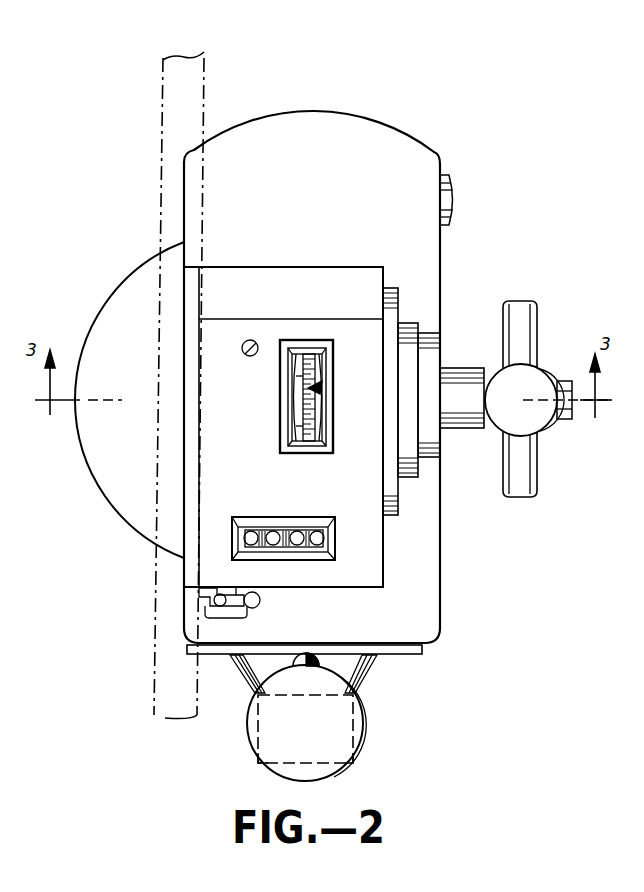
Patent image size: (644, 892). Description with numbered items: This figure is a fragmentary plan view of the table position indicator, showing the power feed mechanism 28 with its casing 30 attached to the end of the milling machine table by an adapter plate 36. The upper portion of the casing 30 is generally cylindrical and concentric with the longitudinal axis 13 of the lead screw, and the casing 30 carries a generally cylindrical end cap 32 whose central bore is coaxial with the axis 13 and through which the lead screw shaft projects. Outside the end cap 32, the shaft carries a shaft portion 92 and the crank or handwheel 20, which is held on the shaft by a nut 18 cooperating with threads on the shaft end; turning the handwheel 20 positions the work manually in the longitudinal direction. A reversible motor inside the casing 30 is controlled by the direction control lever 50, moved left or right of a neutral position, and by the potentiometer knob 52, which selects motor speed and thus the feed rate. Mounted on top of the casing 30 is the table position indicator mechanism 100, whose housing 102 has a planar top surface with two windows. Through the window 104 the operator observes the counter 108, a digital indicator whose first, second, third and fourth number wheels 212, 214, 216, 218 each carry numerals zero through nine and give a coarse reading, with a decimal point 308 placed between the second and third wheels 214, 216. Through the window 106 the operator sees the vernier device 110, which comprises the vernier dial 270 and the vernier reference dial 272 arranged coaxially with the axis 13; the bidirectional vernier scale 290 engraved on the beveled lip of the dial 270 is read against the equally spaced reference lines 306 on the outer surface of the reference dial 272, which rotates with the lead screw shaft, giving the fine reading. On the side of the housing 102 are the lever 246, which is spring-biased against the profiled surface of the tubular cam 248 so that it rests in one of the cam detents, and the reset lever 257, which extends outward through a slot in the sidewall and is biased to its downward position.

The longitudinal axis 13 is at (583, 405).
The nut 18 is at (559, 380).
The handwheel 20 is at (538, 318).
The power feed mechanism 28 is at (339, 382).
The casing 30 is at (441, 568).
The end cap 32 is at (397, 288).
The adapter plate 36 is at (207, 83).
The direction control lever 50 is at (305, 717).
The potentiometer knob 52 is at (258, 734).
The valve shaft 92 is at (447, 367).
The table position indicator mechanism 100 is at (247, 267).
The housing 102 is at (297, 402).
The window 104 is at (284, 537).
The window 106 is at (329, 428).
The counter 108 is at (270, 523).
The vernier device 110 is at (325, 386).
The first number wheel 212 is at (318, 553).
The second number wheel 214 is at (302, 525).
The third number wheel 216 is at (267, 553).
The fourth number wheel 218 is at (252, 553).
The lever 246 is at (259, 602).
The tubular cam 248 is at (214, 610).
The reset lever 257 is at (228, 619).
The vernier dial 270 is at (317, 407).
The vernier reference dial 272 is at (296, 402).
The vernier scale 290 is at (311, 356).
The reference lines 306 is at (300, 377).
The decimal point 308 is at (285, 546).